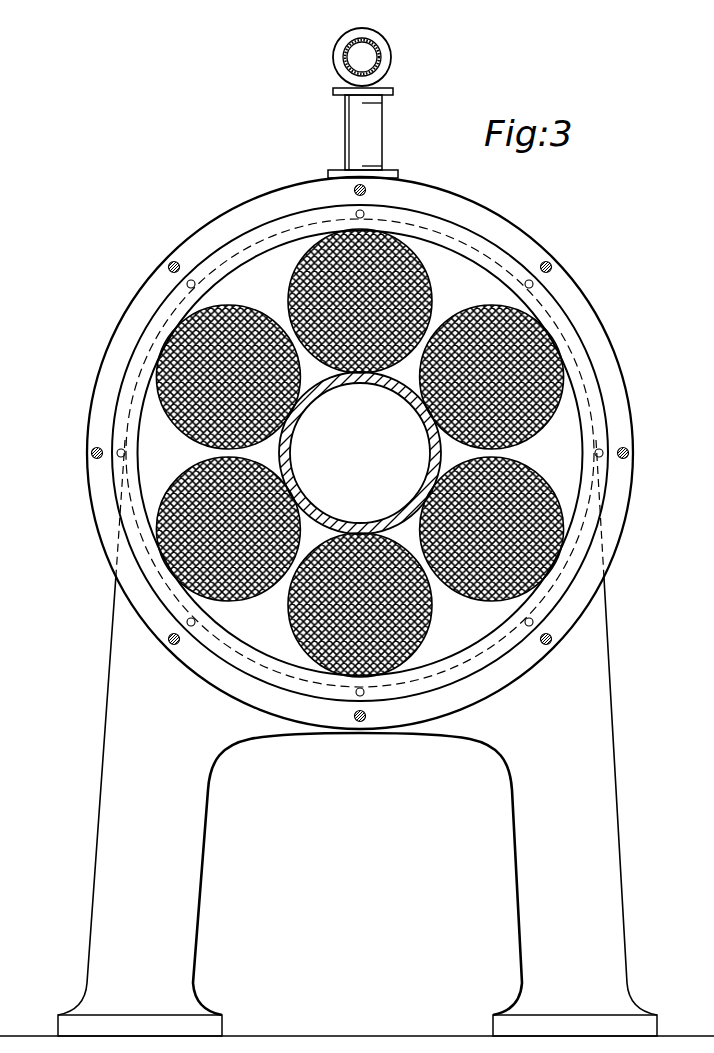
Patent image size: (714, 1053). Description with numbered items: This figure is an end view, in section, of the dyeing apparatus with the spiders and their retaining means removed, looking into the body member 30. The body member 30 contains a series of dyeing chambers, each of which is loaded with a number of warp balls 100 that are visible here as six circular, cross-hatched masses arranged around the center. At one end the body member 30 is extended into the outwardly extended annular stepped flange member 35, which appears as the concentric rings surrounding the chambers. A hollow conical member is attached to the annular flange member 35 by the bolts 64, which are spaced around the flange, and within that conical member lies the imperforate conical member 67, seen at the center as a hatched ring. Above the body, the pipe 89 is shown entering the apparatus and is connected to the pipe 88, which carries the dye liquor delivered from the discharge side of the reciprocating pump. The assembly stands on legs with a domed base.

The pipe 88 is at (388, 43).
The pipe 89 is at (373, 140).
The body member 30 is at (455, 270).
The annular stepped flange member 35 is at (518, 242).
The bolts 64 is at (552, 265).
The warp balls 100 is at (292, 283).
The imperforate conical member 67 is at (417, 410).